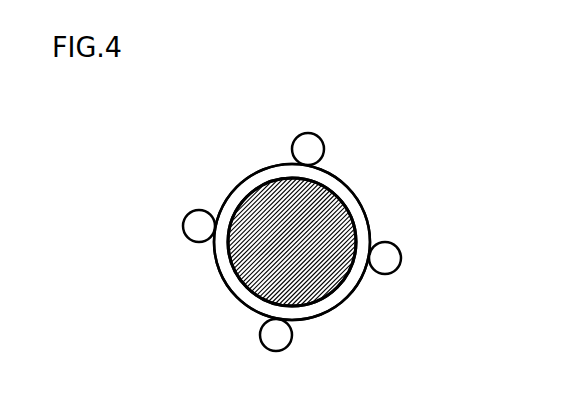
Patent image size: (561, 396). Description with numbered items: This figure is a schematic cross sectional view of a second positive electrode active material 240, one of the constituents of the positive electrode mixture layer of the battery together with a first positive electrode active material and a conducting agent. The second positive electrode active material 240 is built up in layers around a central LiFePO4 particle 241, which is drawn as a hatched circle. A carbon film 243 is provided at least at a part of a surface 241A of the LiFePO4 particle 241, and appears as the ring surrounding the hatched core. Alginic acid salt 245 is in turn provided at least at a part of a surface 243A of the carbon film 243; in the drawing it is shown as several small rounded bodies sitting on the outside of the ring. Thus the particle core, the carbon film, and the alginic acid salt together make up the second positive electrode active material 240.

The second positive electrode active material 240 is at (398, 128).
The LiFePO4 particle 241 is at (246, 269).
The surface of LiFePO4 particle 241A is at (250, 190).
The carbon film 243 is at (330, 302).
The surface of carbon film 243A is at (357, 288).
The alginic acid salt 245 is at (390, 258).